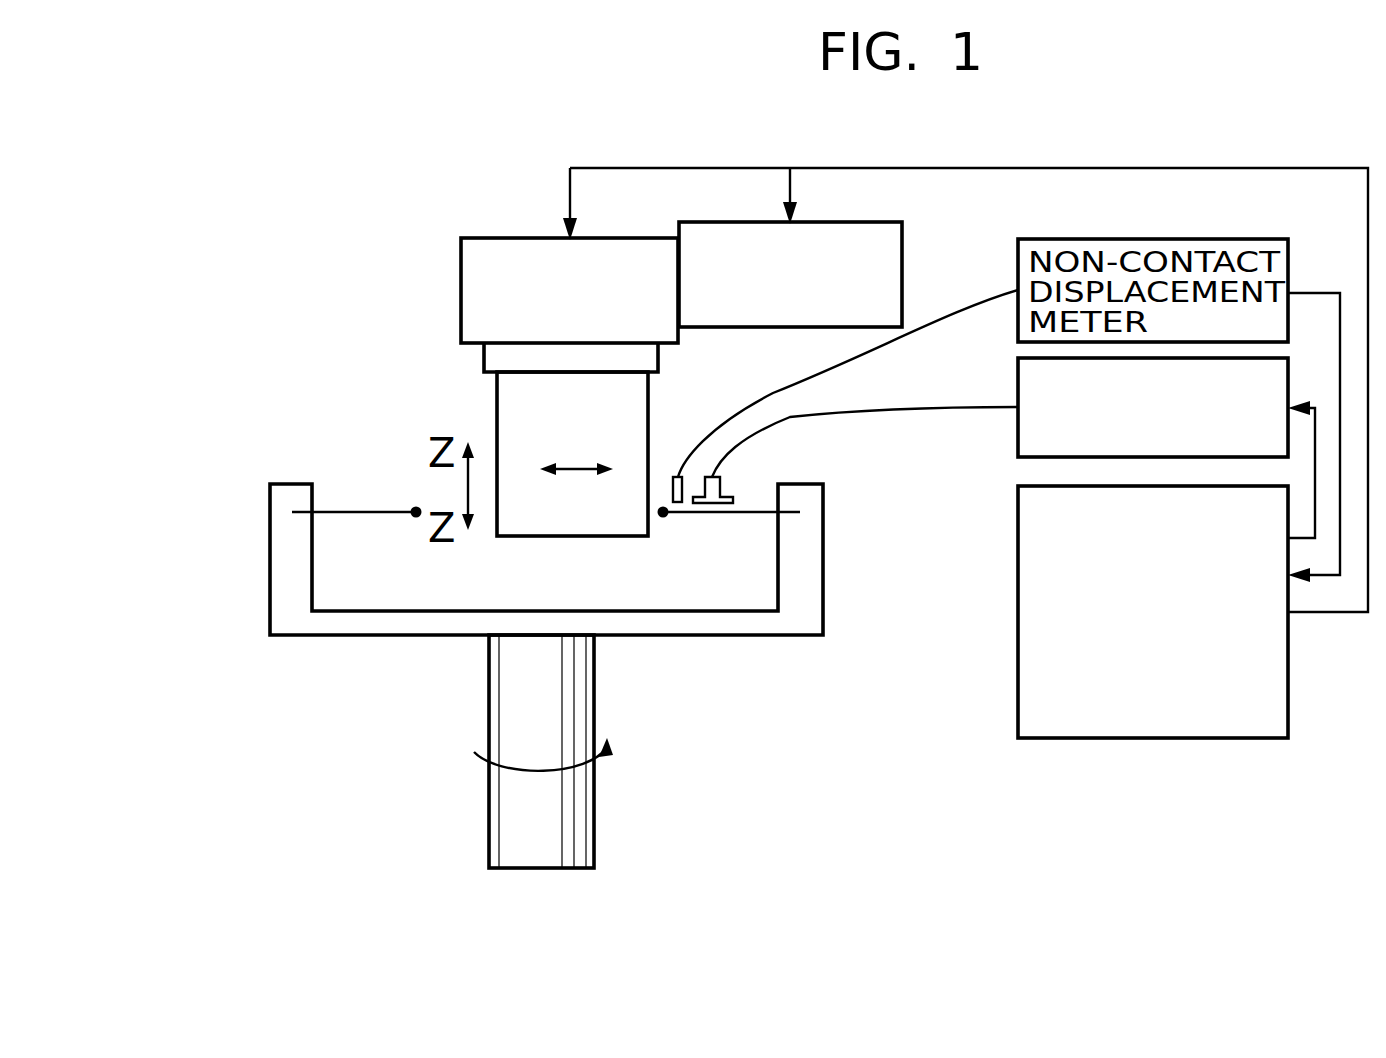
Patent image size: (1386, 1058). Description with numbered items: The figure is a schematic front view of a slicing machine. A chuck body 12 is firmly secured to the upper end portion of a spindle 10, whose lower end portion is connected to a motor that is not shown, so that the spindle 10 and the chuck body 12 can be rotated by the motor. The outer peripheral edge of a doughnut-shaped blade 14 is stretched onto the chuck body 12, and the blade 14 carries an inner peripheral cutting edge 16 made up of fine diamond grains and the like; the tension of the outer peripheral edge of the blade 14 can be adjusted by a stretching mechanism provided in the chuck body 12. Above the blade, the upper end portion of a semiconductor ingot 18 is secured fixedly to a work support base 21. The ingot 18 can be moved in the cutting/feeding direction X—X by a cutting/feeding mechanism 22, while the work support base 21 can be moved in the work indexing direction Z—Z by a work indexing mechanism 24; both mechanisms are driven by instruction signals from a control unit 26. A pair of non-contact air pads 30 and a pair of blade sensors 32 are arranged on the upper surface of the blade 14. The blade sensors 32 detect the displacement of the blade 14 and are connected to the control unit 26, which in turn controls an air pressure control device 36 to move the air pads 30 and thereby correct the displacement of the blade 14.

The spindle 10 is at (492, 712).
The chuck body 12 is at (290, 580).
The blade 14 is at (342, 512).
The inner peripheral cutting edge 16 is at (415, 512).
The semiconductor ingot 18 is at (497, 398).
The work support base 21 is at (484, 359).
The cutting/feeding mechanism 22 is at (902, 242).
The work indexing mechanism 24 is at (461, 302).
The control unit 26 is at (1288, 700).
The air pad 30 is at (723, 483).
The blade sensor 32 is at (673, 485).
The air pressure control device 36 is at (1018, 378).